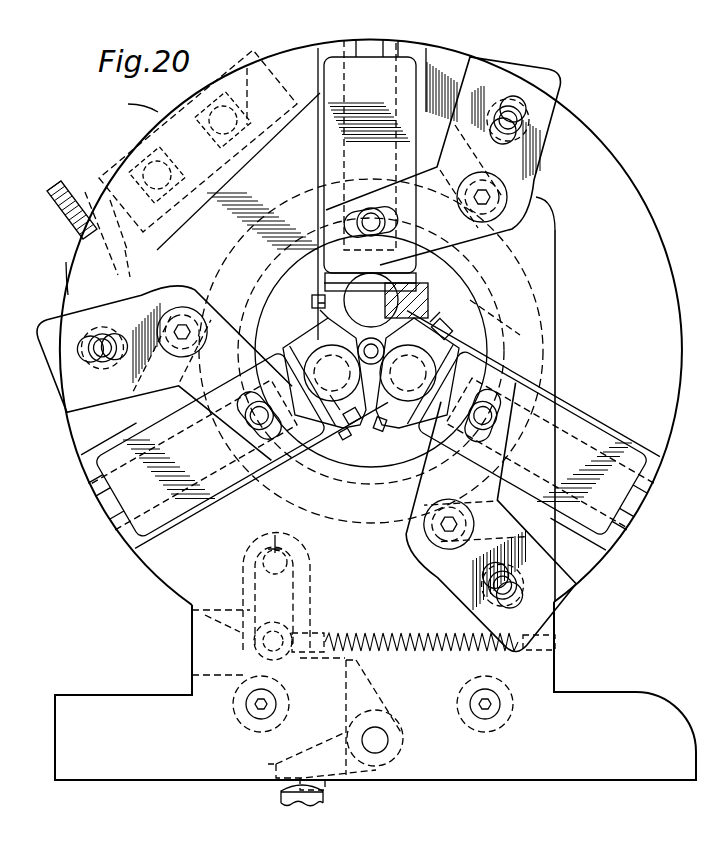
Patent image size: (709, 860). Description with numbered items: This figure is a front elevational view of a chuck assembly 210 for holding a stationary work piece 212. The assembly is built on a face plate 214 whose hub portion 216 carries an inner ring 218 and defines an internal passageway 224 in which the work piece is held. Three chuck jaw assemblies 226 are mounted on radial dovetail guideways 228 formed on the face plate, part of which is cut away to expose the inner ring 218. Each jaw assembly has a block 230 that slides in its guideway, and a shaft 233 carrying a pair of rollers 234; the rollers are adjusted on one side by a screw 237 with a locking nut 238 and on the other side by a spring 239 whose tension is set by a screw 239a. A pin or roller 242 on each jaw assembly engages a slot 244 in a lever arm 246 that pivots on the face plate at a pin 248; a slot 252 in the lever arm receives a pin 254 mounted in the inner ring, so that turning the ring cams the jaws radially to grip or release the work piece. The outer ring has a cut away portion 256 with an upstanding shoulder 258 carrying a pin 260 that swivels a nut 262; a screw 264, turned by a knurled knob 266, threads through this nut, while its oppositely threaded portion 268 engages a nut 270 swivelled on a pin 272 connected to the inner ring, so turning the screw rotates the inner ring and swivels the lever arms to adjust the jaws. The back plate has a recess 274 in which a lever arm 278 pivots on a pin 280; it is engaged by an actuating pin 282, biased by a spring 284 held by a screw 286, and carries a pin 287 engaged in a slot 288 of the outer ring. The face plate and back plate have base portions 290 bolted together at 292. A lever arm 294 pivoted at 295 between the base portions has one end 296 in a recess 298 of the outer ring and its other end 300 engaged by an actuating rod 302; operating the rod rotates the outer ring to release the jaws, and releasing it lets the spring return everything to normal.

The chuck assembly 210 is at (128, 107).
The work piece 212 is at (328, 342).
The face plate 214 is at (545, 240).
The hub portion 216 is at (492, 355).
The inner ring 218 is at (622, 178).
The internal passageway 224 is at (482, 323).
The chuck jaw assemblies 226 is at (334, 155).
The dovetail guideways 228 is at (392, 50).
The block 230 is at (410, 62).
The shaft 233 is at (332, 318).
The rollers 234 is at (319, 297).
The screw 237 is at (312, 304).
The locking nut 238 is at (262, 291).
The spring 239 is at (376, 293).
The screw 239a is at (452, 250).
The pin or roller 242 is at (370, 213).
The slot 244 is at (350, 221).
The lever arm 246 is at (540, 138).
The pin 248 is at (498, 194).
The slot 252 is at (509, 97).
The pin 254 is at (510, 121).
The cut away portion 256 is at (85, 277).
The upstanding shoulder 258 is at (198, 141).
The pin 260 is at (160, 160).
The nut 262 is at (172, 142).
The screw 264 is at (126, 186).
The knurled knob 266 is at (68, 193).
The portion 268 is at (250, 62).
The nut 270 is at (224, 106).
The pin 272 is at (202, 108).
The recess 274 is at (298, 540).
The lever arm 278 is at (305, 565).
The pin 280 is at (275, 535).
The actuating pin 282 is at (308, 624).
The spring 284 is at (387, 632).
The screw 286 is at (556, 645).
The pin 287 is at (252, 658).
The slot 288 is at (306, 607).
The base portion 290 is at (626, 693).
The bolts 292 is at (246, 712).
The lever arm 294 is at (384, 695).
The pivot 295 is at (378, 742).
The end 296 is at (382, 672).
The recess 298 is at (335, 670).
The end 300 is at (268, 764).
The actuating rod 302 is at (322, 799).